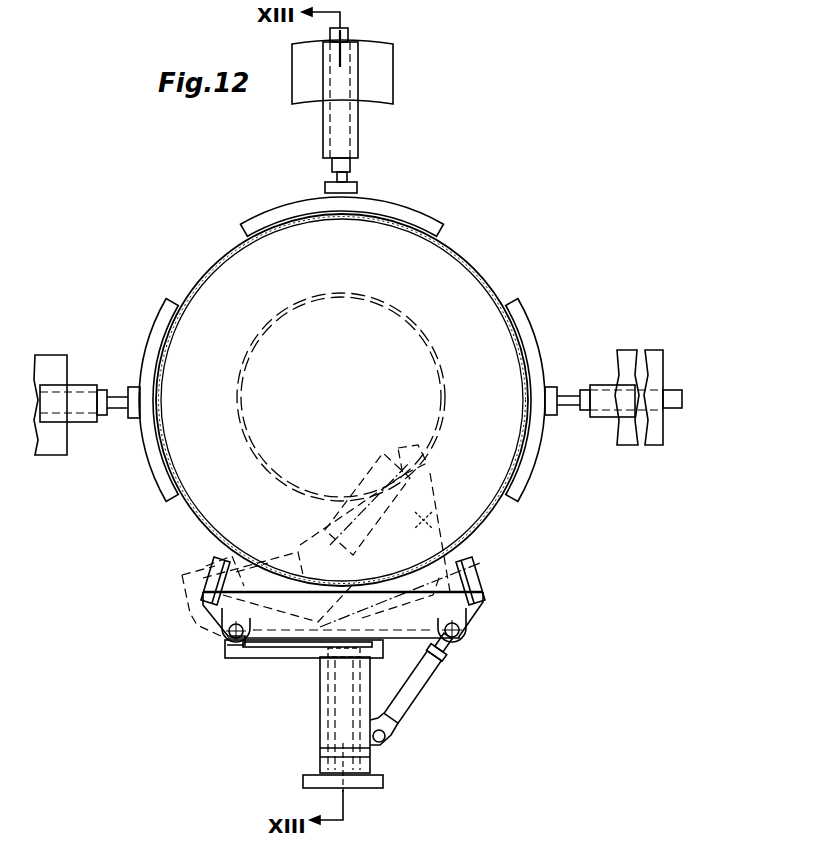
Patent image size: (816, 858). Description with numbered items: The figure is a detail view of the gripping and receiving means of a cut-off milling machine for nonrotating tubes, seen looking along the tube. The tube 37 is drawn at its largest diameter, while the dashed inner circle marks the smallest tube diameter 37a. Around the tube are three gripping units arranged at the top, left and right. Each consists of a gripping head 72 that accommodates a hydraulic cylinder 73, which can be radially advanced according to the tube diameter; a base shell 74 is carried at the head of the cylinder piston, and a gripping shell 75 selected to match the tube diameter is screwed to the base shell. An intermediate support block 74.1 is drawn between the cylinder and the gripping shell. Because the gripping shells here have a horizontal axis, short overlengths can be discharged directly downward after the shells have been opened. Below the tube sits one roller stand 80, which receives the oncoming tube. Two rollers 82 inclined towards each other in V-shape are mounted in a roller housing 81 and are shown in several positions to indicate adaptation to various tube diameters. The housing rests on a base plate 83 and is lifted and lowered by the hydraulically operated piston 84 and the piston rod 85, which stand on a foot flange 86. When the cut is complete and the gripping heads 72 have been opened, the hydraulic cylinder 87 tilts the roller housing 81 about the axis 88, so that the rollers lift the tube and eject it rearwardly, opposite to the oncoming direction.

The tube 37 is at (477, 273).
The tube of smallest diameter 37a is at (432, 342).
The gripping head 72 is at (385, 75).
The hydraulic cylinder 73 is at (348, 32).
The base shell 74 is at (357, 186).
The support block 74.1 is at (150, 412).
The gripping shell 75 is at (436, 233).
The roller stand 80 is at (272, 685).
The roller housing 81 is at (480, 605).
The roller 82 is at (242, 568).
The base plate 83 is at (255, 652).
The hydraulically operated piston 84 is at (340, 658).
The piston rod 85 is at (338, 710).
The foot flange 86 is at (327, 763).
The hydraulic cylinder 87 is at (425, 690).
The axis 88 is at (228, 637).